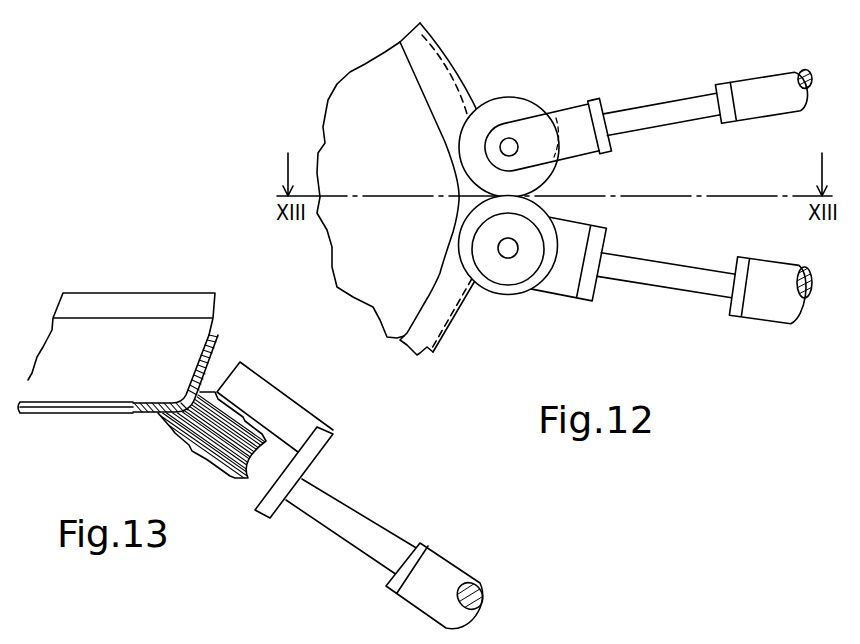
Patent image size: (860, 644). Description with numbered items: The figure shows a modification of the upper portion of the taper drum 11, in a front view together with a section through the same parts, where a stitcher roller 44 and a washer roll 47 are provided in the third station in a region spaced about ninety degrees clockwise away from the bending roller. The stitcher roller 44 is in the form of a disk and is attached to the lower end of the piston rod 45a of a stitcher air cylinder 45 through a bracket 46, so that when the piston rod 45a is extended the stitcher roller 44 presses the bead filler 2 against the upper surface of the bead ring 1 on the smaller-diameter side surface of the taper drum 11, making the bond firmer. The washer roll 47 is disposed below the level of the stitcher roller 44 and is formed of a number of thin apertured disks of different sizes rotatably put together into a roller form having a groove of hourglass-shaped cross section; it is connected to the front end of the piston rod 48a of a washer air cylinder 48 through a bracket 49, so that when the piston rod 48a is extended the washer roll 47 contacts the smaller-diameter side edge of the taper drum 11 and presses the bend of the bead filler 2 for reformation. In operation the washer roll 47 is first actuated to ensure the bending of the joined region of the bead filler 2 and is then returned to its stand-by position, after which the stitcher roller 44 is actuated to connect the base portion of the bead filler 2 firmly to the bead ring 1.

In FIG. 12, the bead ring 1 is at (400, 335).
In FIG. 13, the bead ring 1 is at (135, 418).
In FIG. 12, the bead filler 2 is at (433, 357).
In FIG. 13, the bead filler 2 is at (155, 415).
In FIG. 12, the taper drum 11 is at (342, 278).
In FIG. 13, the taper drum 11 is at (78, 393).
In FIG. 12, the stitcher roller 44 is at (530, 110).
In FIG. 12, the stitcher air cylinder 45 is at (747, 92).
In FIG. 12, the piston rod 45a is at (655, 117).
In FIG. 12, the bracket 46 is at (573, 105).
In FIG. 12, the washer roll 47 is at (507, 300).
In FIG. 13, the washer roll 47 is at (230, 476).
In FIG. 12, the washer air cylinder 48 is at (763, 310).
In FIG. 13, the washer air cylinder 48 is at (438, 567).
In FIG. 12, the piston rod 48a is at (665, 278).
In FIG. 13, the piston rod 48a is at (347, 520).
In FIG. 12, the bracket 49 is at (573, 283).
In FIG. 13, the bracket 49 is at (268, 512).